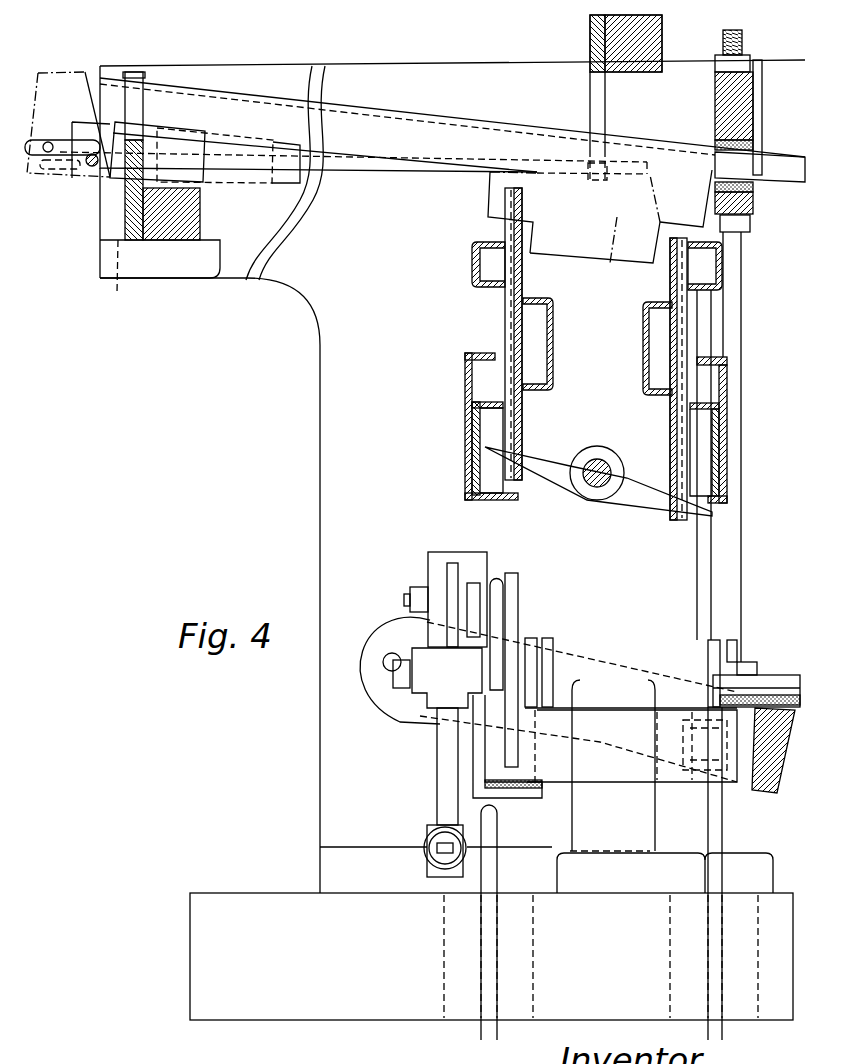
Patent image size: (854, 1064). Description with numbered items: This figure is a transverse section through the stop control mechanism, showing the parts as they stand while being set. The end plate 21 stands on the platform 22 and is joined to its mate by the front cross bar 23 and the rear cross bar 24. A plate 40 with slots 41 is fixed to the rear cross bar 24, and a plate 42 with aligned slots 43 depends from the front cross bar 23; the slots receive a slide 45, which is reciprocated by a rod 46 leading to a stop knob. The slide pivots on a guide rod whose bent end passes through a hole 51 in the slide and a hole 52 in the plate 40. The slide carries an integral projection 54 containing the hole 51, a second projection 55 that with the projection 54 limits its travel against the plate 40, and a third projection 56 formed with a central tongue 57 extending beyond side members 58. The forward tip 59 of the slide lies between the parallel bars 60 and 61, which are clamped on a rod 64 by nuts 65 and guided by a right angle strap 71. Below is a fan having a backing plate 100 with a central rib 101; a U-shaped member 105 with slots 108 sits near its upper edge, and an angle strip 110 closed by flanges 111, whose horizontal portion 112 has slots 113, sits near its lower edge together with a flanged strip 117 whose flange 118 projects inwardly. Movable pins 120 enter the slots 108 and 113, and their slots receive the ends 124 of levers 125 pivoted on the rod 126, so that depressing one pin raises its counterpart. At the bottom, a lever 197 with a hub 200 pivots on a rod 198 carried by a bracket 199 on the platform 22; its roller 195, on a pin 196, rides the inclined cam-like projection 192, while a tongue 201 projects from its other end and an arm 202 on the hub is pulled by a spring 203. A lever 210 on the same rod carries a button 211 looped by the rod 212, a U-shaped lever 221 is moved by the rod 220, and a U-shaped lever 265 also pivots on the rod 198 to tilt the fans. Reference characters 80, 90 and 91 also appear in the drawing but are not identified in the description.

The upright or end plate 21 is at (326, 479).
The platform 22 is at (491, 956).
The front cross bar 23 is at (662, 25).
The rear cross bar 24 is at (168, 228).
The plate 40 is at (125, 220).
The slots 41 is at (125, 130).
The plate 42 is at (590, 35).
The slots 43 is at (590, 67).
The slide 45 is at (452, 116).
The rod 46 is at (30, 168).
The hole 51 is at (88, 165).
The hole 52 is at (105, 273).
The integral projection 54 is at (135, 200).
The second projection 55 is at (248, 175).
The third projection 56 is at (590, 178).
The central tongue 57 is at (620, 225).
The side members 58 is at (600, 211).
The forward tip 59 is at (782, 165).
The upper bar 60 is at (740, 108).
The lower bar 61 is at (753, 208).
The rod 64 is at (741, 322).
The nuts 65 is at (735, 60).
The right angle strap 71 is at (762, 135).
The wedge block 80 is at (765, 795).
The right bracket 90 is at (745, 398).
The left bracket 91 is at (597, 426).
The backing or inner plate 100 is at (665, 275).
The central rib 101 is at (643, 340).
The U-shaped member 105 is at (472, 270).
The slots 108 is at (505, 290).
The angle strip 110 is at (475, 500).
The flanges 111 is at (700, 470).
The horizontal portion 112 is at (472, 425).
The slots 113 is at (500, 405).
The flanged strip 117 is at (465, 372).
The flange 118 is at (480, 353).
The movable pins 120 is at (505, 228).
The ends 124 is at (598, 473).
The levers 125 is at (590, 490).
The longitudinally extending rod 126 is at (600, 446).
The inclined cam-like projection 192 is at (450, 590).
The roller 195 is at (440, 563).
The pin 196 is at (410, 600).
The lever 197 is at (548, 640).
The rod 198 is at (402, 690).
The bracket 199 is at (665, 873).
The hub 200 is at (447, 678).
The forwardly projecting tongue 201 is at (525, 800).
The arm 202 is at (437, 797).
The spring 203 is at (425, 858).
The lever 210 is at (515, 625).
The button 211 is at (496, 585).
The rod 212 is at (497, 838).
The rod 220 is at (723, 830).
The U-shaped lever 221 is at (618, 785).
The U-shaped lever 265 is at (712, 650).